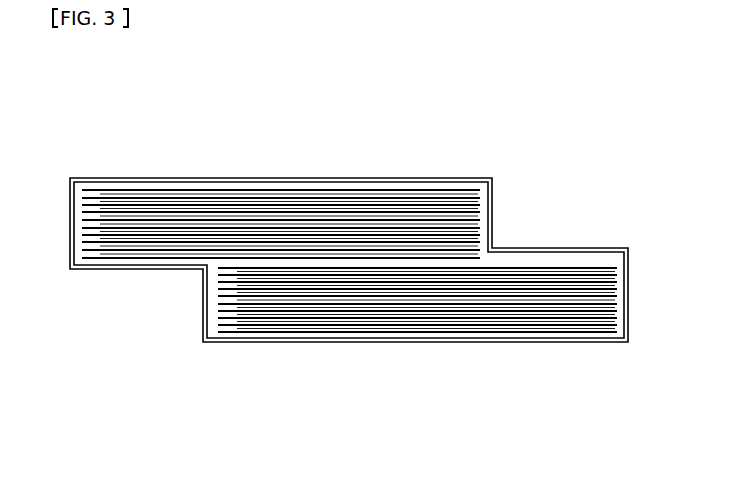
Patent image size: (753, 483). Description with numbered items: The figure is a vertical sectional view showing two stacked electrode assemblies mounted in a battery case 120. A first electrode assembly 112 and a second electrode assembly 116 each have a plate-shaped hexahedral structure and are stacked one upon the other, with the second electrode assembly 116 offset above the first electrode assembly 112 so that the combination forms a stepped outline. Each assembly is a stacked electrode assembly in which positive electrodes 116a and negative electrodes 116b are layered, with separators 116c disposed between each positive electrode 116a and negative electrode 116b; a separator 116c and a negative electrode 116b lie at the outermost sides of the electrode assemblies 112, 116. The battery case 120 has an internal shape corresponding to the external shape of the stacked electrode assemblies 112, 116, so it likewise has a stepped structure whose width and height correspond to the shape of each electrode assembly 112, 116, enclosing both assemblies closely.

The battery case 120 is at (425, 343).
The second electrode assembly 116 is at (119, 248).
The positive electrode 116a is at (470, 202).
The negative electrode 116b is at (462, 194).
The separator 116c is at (477, 197).
The first electrode assembly 112 is at (255, 322).